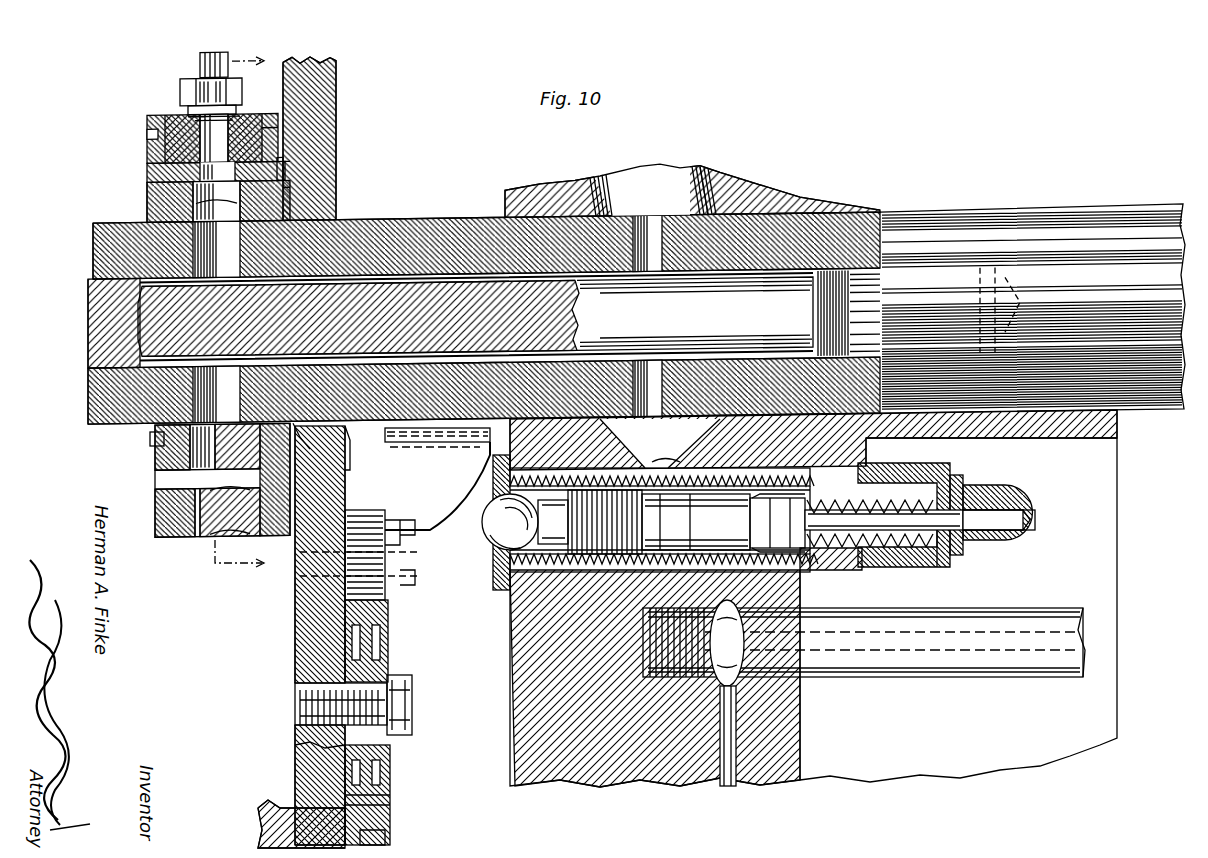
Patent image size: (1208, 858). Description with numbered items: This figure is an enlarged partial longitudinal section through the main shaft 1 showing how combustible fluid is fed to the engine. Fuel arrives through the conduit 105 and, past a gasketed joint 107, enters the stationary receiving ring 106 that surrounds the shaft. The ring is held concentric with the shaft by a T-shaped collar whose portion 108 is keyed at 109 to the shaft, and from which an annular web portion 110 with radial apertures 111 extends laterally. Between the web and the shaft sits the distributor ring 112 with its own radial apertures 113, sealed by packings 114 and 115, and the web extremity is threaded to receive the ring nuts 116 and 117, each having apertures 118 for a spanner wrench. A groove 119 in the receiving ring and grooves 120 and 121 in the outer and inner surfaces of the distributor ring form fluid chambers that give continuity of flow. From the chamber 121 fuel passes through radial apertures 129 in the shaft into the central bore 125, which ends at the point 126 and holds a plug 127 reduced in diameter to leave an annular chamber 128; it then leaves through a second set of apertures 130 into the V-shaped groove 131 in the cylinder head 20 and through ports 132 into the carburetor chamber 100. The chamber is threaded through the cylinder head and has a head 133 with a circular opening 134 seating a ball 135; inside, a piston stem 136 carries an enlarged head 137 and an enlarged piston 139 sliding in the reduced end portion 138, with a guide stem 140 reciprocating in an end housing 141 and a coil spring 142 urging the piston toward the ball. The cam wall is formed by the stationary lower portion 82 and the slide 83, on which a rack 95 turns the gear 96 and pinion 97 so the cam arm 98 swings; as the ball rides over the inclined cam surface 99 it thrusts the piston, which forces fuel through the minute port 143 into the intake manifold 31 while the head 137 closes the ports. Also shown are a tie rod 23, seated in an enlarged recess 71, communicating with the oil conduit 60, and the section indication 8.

The main shaft 1 is at (1028, 223).
The section line 8 is at (254, 64).
The cylinder head 20 is at (770, 198).
The tie rod 23 is at (948, 668).
The intake manifold 31 is at (1020, 730).
The oil conduit 60 is at (728, 787).
The enlarged recess 71 is at (745, 683).
The stationary lower portion 82 is at (300, 808).
The slide 83 is at (336, 68).
The rack 95 is at (390, 795).
The gear 96 is at (388, 660).
The gear pinion 97 is at (372, 518).
The cam arm 98 is at (420, 482).
The cam surface 99 is at (458, 492).
The carburetor chamber 100 is at (830, 570).
The conduit 105 is at (200, 66).
The receiving ring 106 is at (190, 111).
The gasketed joint 107 is at (182, 92).
The T-shaped collar portion 108 is at (337, 146).
The key 109 is at (315, 440).
The web portion 110 is at (150, 173).
The radial apertures 111 is at (290, 174).
The distributor ring 112 is at (200, 472).
The radial apertures 113 is at (296, 186).
The packing 114 is at (300, 207).
The packing 115 is at (147, 206).
The ring nut 116 is at (147, 126).
The ring nut 117 is at (150, 191).
The apertures 118 is at (147, 136).
The groove 119 is at (236, 120).
The groove 120 is at (185, 540).
The groove 121 is at (240, 420).
The central bore 125 is at (412, 286).
The bore terminus 126 is at (1005, 305).
The plug 127 is at (108, 308).
The annular chamber 128 is at (447, 286).
The radial apertures 129 is at (212, 244).
The radial apertures 130 is at (648, 426).
The V-shaped groove 131 is at (705, 190).
The ports 132 is at (640, 560).
The head 133 is at (496, 580).
The circular opening 134 is at (540, 540).
The ball 135 is at (492, 532).
The piston stem 136 is at (694, 512).
The enlarged head 137 is at (640, 544).
The reduced end portion 138 is at (880, 470).
The piston 139 is at (755, 540).
The guide stem 140 is at (995, 497).
The end housing 141 is at (965, 478).
The coil spring 142 is at (950, 550).
The minute port 143 is at (938, 567).